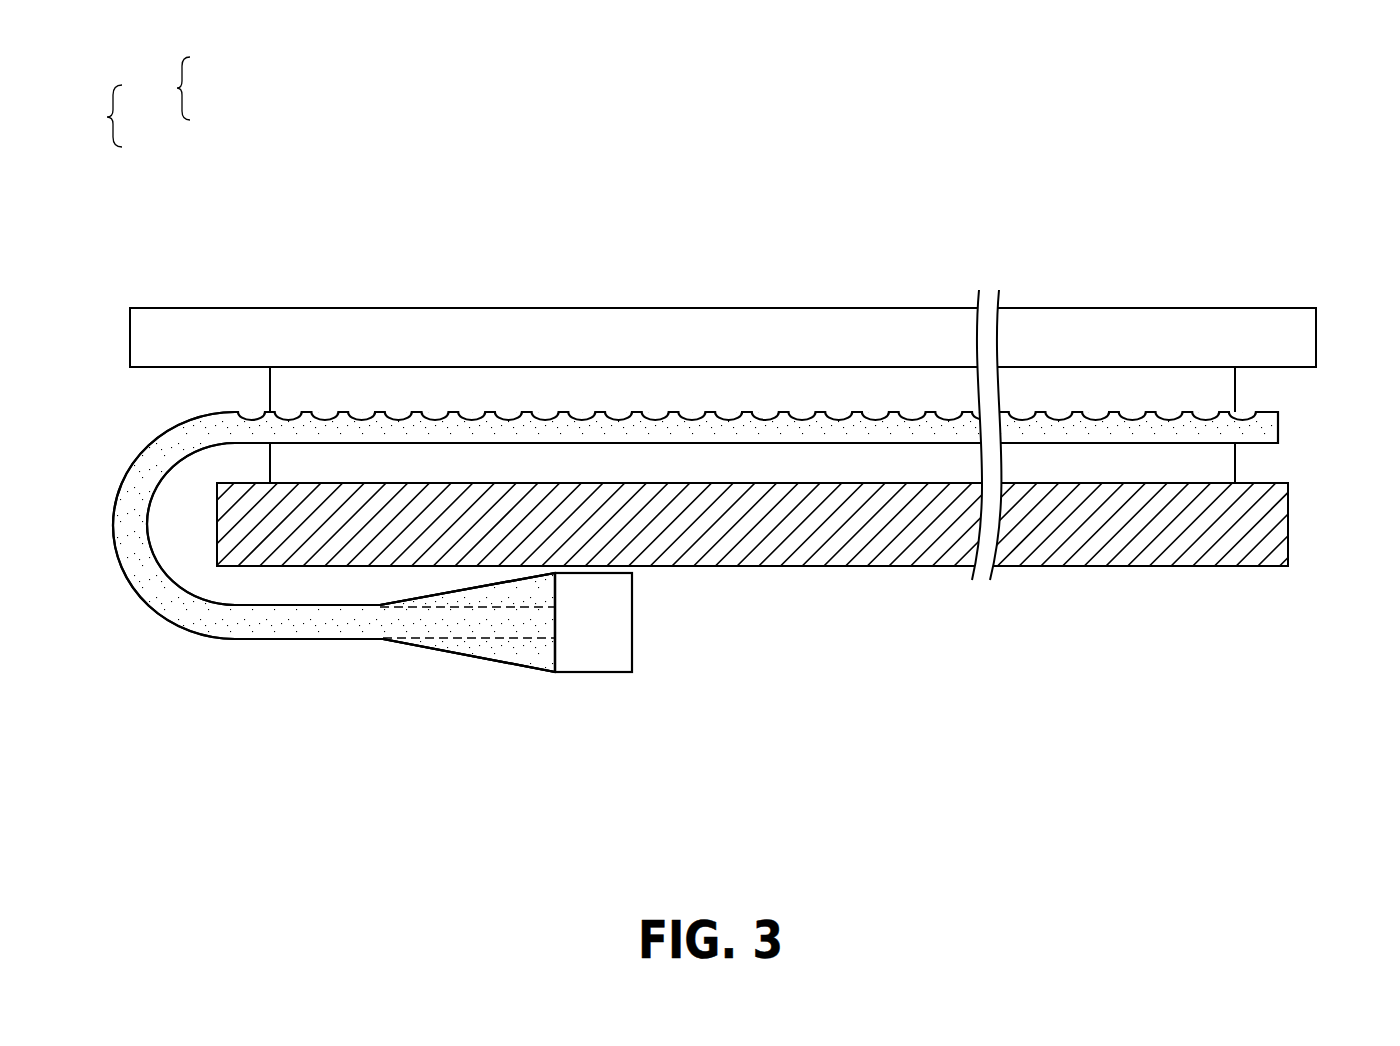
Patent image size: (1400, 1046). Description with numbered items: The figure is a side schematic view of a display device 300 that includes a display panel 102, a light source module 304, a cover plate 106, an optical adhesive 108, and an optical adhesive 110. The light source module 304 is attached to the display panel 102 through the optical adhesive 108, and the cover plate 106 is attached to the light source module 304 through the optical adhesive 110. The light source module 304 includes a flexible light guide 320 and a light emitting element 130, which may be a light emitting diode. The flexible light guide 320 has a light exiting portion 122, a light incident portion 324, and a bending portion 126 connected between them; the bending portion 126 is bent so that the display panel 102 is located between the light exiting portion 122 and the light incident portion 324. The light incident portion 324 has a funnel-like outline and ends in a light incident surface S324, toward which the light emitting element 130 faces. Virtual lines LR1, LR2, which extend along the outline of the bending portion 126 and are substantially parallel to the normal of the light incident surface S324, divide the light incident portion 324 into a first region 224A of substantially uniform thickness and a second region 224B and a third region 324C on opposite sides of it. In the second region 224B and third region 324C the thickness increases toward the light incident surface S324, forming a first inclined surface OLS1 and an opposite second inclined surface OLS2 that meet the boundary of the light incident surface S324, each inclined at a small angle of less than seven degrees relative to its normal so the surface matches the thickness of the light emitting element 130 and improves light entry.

The display panel 102 is at (1273, 527).
The cover plate 106 is at (1305, 338).
The optical adhesive 108 is at (1217, 465).
The optical adhesive 110 is at (1217, 395).
The light exiting portion 122 is at (523, 430).
The bending portion 126 is at (185, 438).
The light emitting element 130 is at (632, 656).
The display device 300 is at (1337, 827).
The light source module 304 is at (92, 116).
The flexible light guide 320 is at (157, 88).
The light incident portion 324 is at (617, 755).
The third region 324C is at (533, 652).
The first region 224A is at (478, 632).
The second region 224B is at (461, 598).
The light incident surface S324 is at (563, 625).
The first inclined surface OLS1 is at (434, 593).
The second inclined surface OLS2 is at (393, 641).
The virtual line LR1 is at (403, 607).
The virtual line LR2 is at (414, 638).